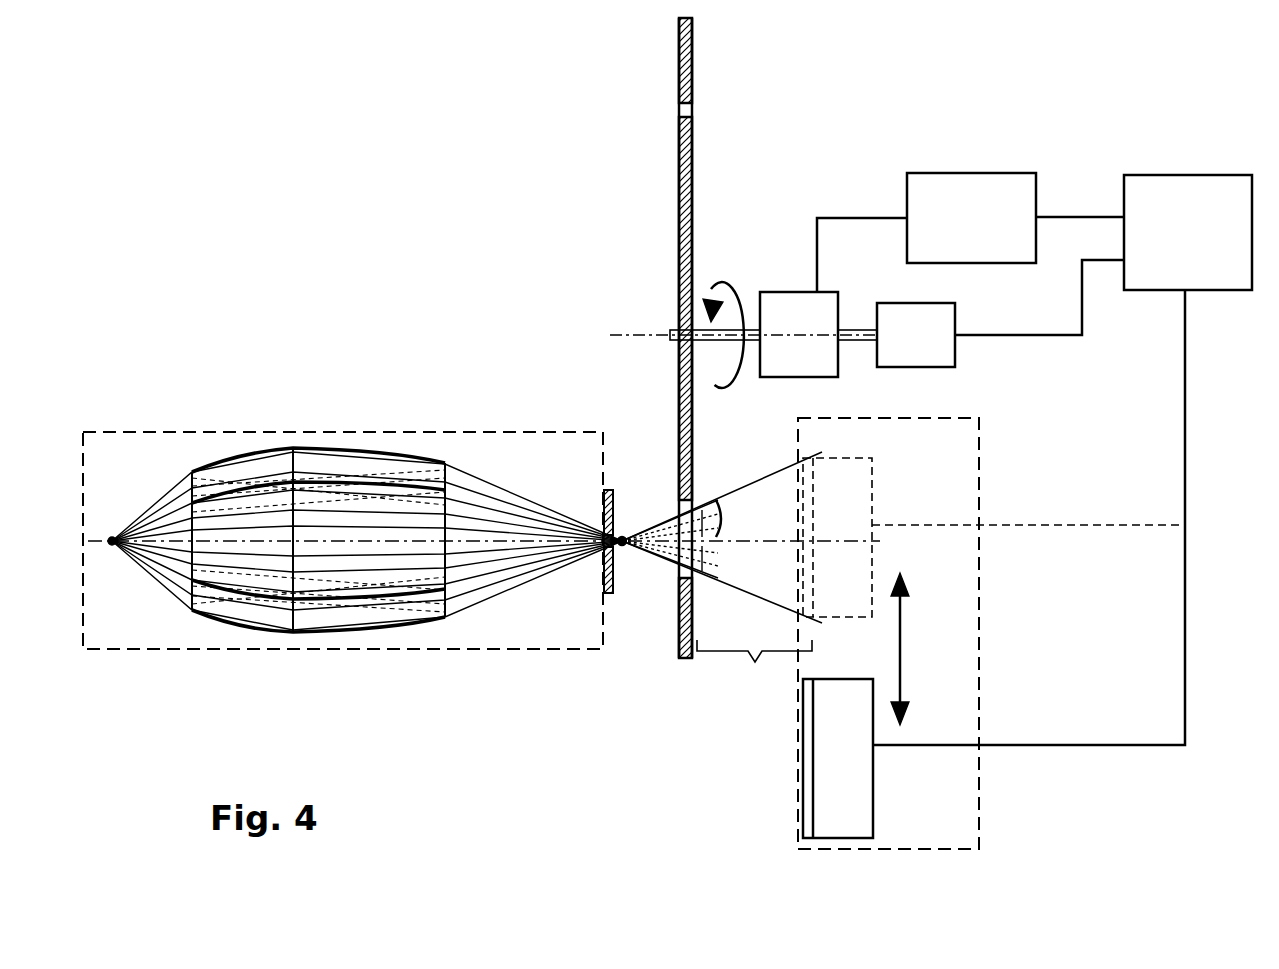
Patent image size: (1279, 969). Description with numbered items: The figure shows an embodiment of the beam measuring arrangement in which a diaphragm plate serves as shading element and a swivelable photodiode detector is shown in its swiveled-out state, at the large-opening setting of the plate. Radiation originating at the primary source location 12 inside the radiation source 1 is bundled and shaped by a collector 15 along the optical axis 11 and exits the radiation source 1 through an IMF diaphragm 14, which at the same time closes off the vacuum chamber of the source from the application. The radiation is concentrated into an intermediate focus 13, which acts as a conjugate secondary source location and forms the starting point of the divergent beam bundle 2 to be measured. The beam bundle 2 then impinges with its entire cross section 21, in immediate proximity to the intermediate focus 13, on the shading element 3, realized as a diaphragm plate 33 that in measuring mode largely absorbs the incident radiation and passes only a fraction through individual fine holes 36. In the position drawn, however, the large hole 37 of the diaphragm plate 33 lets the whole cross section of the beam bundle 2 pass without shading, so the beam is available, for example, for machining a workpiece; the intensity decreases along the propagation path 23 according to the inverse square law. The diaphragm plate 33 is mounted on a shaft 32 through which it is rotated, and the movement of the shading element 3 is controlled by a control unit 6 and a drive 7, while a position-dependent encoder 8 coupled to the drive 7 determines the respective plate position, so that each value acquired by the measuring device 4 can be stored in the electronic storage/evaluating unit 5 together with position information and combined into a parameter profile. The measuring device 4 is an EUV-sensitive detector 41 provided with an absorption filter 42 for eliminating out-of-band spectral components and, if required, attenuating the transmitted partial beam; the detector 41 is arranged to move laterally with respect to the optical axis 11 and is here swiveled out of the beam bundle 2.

The radiation source 1 is at (457, 430).
The beam bundle 2 is at (657, 555).
The shading element 3 is at (678, 225).
The measuring device 4 is at (980, 567).
The electronic storage/evaluating unit 5 is at (1207, 195).
The control unit 6 is at (998, 190).
The drive 7 is at (777, 298).
The position-dependent encoder 8 is at (892, 338).
The optical axis 11 is at (170, 543).
The primary source location 12 is at (115, 533).
The intermediate focus 13 is at (600, 527).
The IMF diaphragm 14 is at (607, 567).
The collector 15 is at (317, 448).
The cross section 21 is at (711, 525).
The propagation path 23 is at (755, 664).
The shaft 32 is at (610, 335).
The diaphragm plate 33 is at (685, 338).
The fine holes 36 is at (678, 105).
The large hole 37 is at (677, 497).
The detector 41 is at (863, 773).
The absorption filter 42 is at (808, 730).